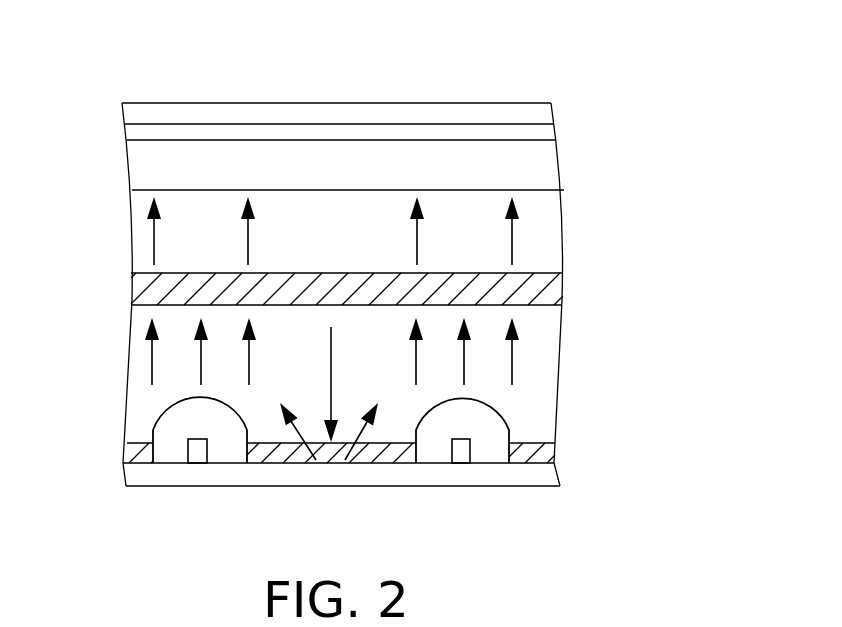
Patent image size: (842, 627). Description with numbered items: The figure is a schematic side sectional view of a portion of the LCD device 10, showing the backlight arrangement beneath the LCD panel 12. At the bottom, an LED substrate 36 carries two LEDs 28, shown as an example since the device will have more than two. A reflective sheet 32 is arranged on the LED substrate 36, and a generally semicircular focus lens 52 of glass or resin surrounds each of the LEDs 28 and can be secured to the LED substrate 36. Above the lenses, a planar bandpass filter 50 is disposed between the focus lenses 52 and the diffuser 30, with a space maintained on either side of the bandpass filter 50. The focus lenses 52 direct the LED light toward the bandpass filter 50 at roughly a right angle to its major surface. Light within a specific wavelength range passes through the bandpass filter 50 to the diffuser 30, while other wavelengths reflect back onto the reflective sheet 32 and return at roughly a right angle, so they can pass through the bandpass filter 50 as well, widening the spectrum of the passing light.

The LCD device 10 is at (696, 48).
The LCD panel 12 is at (548, 110).
The diffuser 30 is at (547, 167).
The bandpass filter 50 is at (543, 290).
The focus lens 52 is at (170, 407).
The LED 28 is at (190, 451).
The reflective sheet 32 is at (127, 452).
The LED substrate 36 is at (565, 473).